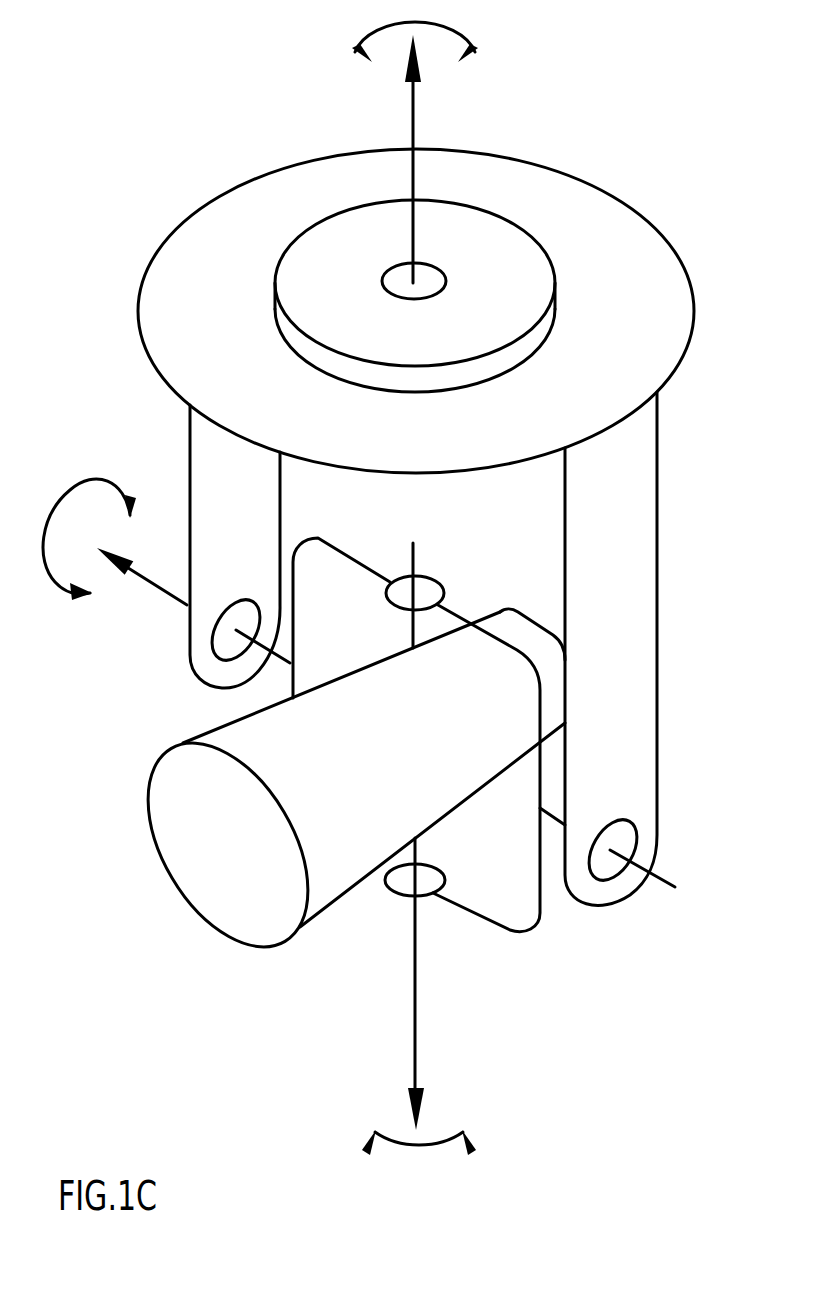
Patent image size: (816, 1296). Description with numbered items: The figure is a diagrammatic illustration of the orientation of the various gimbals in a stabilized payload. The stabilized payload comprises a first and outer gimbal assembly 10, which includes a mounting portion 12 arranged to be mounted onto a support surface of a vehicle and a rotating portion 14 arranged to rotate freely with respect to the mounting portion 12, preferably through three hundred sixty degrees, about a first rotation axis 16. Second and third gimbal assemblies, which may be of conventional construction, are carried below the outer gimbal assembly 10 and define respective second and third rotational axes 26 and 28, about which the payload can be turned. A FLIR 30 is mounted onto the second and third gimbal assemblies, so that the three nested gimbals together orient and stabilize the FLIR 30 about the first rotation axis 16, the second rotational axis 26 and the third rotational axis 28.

The first and outer gimbal assembly 10 is at (562, 216).
The mounting portion 12 is at (350, 227).
The rotating portion 14 is at (245, 222).
The first rotation axis 16 is at (415, 133).
The second rotational axis 26 is at (660, 870).
The third rotational axis 28 is at (412, 630).
The FLIR 30 is at (173, 880).